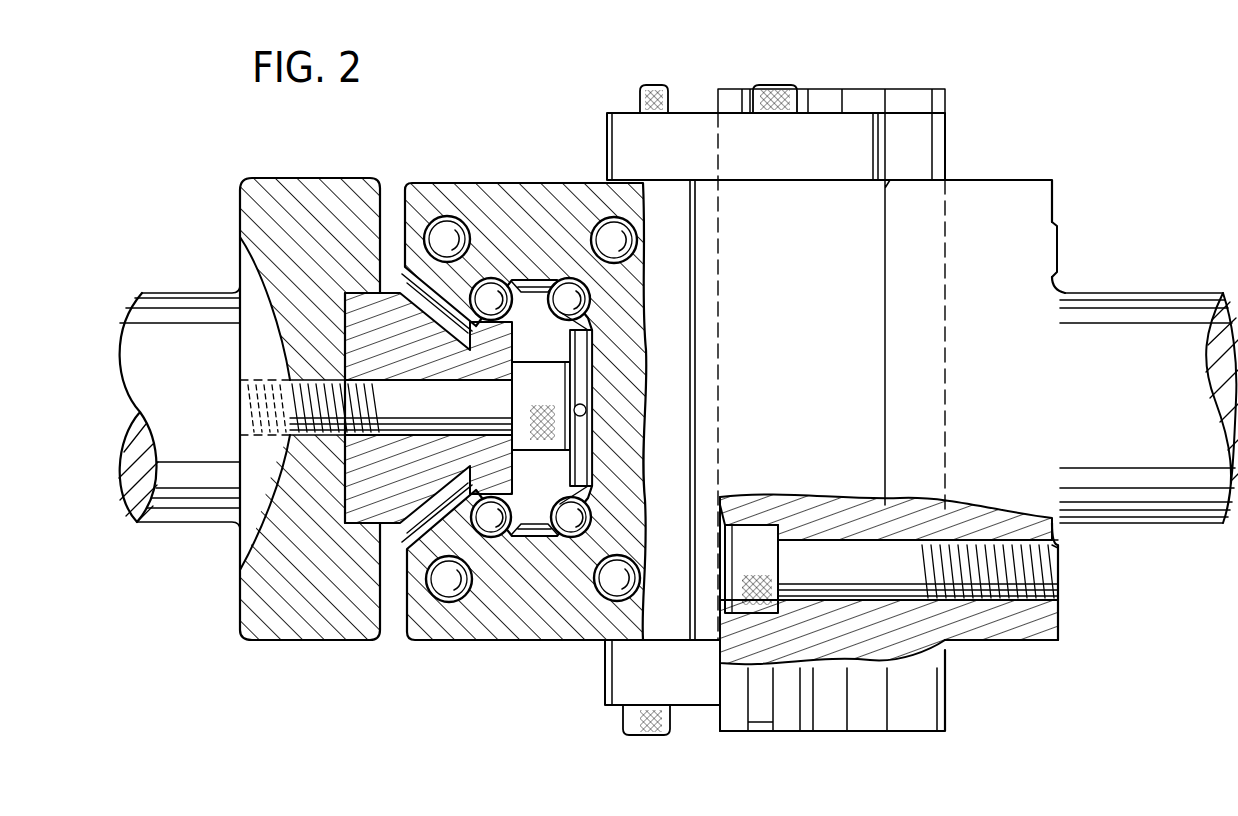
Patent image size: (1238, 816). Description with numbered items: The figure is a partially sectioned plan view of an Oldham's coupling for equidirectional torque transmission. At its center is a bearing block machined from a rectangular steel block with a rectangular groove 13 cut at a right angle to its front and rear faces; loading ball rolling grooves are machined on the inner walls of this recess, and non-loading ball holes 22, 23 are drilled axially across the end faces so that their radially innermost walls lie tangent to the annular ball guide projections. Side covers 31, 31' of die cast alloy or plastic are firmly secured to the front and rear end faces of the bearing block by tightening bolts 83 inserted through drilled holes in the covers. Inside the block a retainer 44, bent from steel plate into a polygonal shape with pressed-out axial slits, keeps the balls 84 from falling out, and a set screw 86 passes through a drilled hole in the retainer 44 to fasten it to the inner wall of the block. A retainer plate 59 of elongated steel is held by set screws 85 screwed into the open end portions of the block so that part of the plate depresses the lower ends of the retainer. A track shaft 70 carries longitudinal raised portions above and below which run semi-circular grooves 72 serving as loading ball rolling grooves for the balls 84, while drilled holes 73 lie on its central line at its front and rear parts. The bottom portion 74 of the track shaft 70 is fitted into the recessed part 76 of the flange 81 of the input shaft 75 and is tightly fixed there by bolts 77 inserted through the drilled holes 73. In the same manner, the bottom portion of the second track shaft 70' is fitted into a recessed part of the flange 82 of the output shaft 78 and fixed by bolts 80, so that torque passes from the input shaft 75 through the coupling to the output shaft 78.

The rectangular groove 13 is at (592, 305).
The non-loading ball hole 22 is at (620, 224).
The non-loading ball hole 23 is at (449, 216).
The side cover 31 is at (747, 134).
The side cover 31' is at (630, 672).
The retainer 44 is at (595, 350).
The retainer plate 59 is at (445, 316).
The track shaft 70 is at (362, 538).
The track shaft 70' is at (832, 690).
The semi-circular groove 72 is at (546, 318).
The drilled hole 73 is at (812, 545).
The bottom portion 74 is at (418, 355).
The input shaft 75 is at (188, 512).
The recessed part 76 is at (352, 495).
The bolt 77 is at (484, 390).
The output shaft 78 is at (1160, 310).
The bolt 80 is at (1058, 245).
The flange 81 is at (318, 190).
The flange 82 is at (1020, 625).
The tightening bolt 83 is at (652, 85).
The ball 84 is at (598, 232).
The set screw 85 is at (458, 330).
The set screw 86 is at (588, 410).